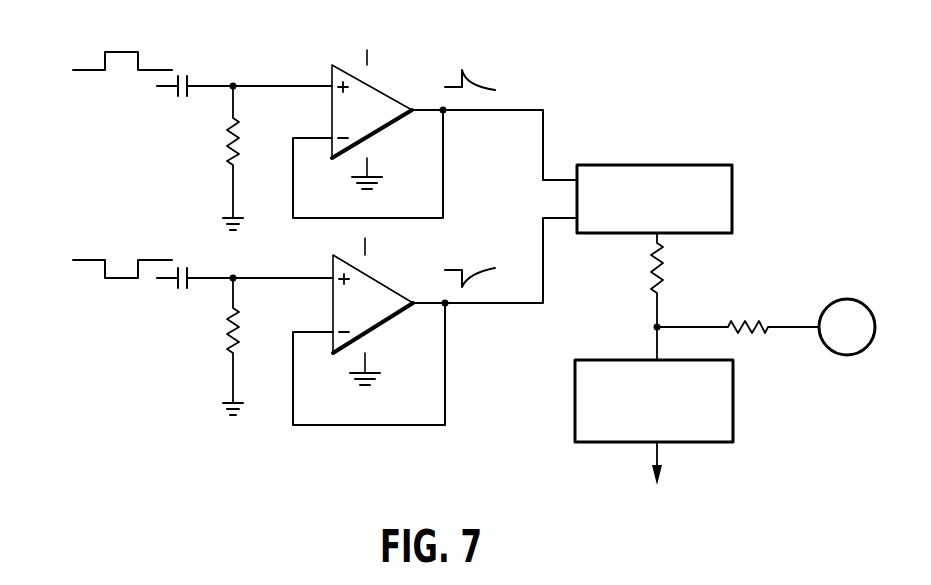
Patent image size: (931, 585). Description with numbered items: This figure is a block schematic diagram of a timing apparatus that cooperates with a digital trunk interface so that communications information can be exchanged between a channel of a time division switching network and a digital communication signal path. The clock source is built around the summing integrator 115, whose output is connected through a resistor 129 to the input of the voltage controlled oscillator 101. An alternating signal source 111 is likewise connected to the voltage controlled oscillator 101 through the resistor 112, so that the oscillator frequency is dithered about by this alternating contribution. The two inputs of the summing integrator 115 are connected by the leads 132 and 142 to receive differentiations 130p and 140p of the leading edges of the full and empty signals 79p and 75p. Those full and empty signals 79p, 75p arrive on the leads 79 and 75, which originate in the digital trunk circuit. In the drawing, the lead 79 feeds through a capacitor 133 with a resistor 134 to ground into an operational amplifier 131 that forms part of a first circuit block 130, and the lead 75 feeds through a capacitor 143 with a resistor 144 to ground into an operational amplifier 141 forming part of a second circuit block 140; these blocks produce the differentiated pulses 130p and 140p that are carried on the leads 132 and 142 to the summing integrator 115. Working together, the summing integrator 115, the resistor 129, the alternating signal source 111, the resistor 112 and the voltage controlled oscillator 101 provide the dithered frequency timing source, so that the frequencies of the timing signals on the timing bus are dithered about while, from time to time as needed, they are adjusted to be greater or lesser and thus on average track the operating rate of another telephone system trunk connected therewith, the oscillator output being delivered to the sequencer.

The full signal 79p is at (125, 52).
The lead 79 is at (170, 90).
The capacitor 133 is at (183, 75).
The resistor 134 is at (230, 128).
The operational amplifier 131 is at (332, 72).
The first amplifier circuit 130 is at (433, 194).
The differentiation of leading edge of full signal 130p is at (470, 72).
The lead 132 is at (543, 144).
The empty signal 75p is at (120, 277).
The lead 75 is at (167, 283).
The capacitor 143 is at (183, 263).
The resistor 144 is at (228, 325).
The operational amplifier 141 is at (347, 352).
The second amplifier circuit 140 is at (431, 407).
The differentiation of leading edge of empty signal 140p is at (470, 272).
The lead 142 is at (543, 233).
The summing integrator 115 is at (645, 165).
The resistor 129 is at (670, 266).
The resistor 112 is at (752, 320).
The alternating signal source 111 is at (850, 356).
The voltage controlled oscillator 101 is at (577, 445).